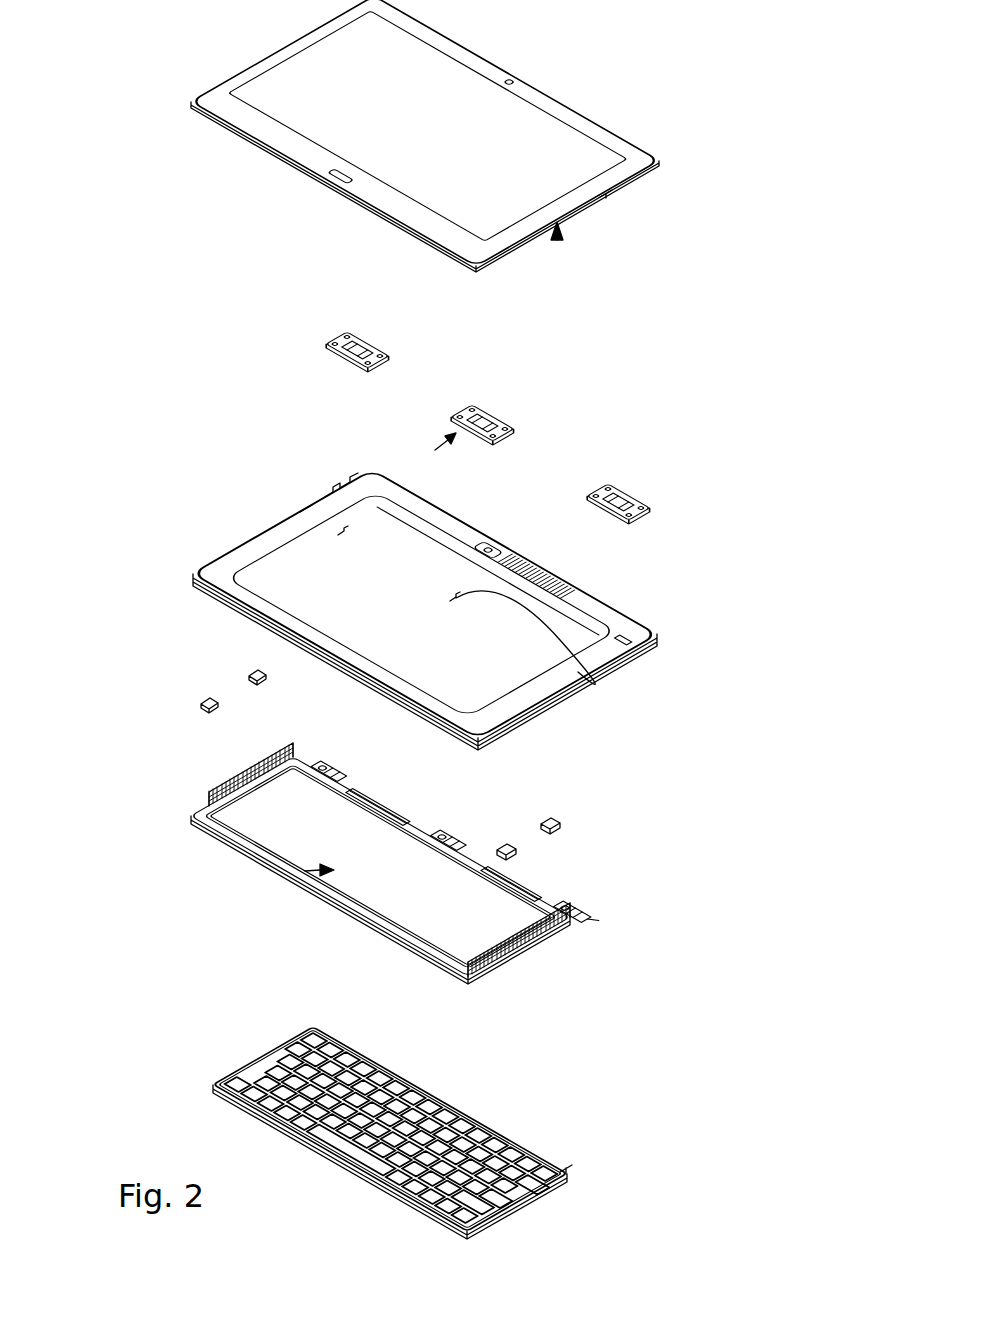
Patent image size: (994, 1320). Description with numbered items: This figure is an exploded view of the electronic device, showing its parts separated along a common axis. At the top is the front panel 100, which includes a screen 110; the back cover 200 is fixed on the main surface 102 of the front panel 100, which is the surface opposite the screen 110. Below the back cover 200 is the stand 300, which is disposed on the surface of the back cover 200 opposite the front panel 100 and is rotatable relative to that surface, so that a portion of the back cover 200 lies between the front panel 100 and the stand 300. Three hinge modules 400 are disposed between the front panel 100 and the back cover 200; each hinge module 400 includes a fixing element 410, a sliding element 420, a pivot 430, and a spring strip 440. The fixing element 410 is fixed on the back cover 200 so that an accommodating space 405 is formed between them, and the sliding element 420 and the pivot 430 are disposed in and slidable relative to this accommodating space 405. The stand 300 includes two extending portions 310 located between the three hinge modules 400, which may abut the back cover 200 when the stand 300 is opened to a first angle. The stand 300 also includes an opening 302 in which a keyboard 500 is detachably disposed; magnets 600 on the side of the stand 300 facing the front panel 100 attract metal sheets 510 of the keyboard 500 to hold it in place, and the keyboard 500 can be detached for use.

The front panel 100 is at (353, 136).
The screen 110 is at (370, 133).
The main surface 102 is at (557, 240).
The back cover 200 is at (263, 540).
The magnets 600 is at (247, 672).
The stand 300 is at (313, 852).
The opening 302 is at (305, 871).
The extending portion 310 is at (377, 805).
The hinge module 400 is at (587, 629).
The accommodating space 405 is at (435, 450).
The fixing element 410 is at (512, 420).
The sliding element 420 is at (462, 830).
The pivot 430 is at (662, 906).
The spring strip 440 is at (640, 648).
The keyboard 500 is at (377, 1133).
The metal sheets 510 is at (570, 1176).